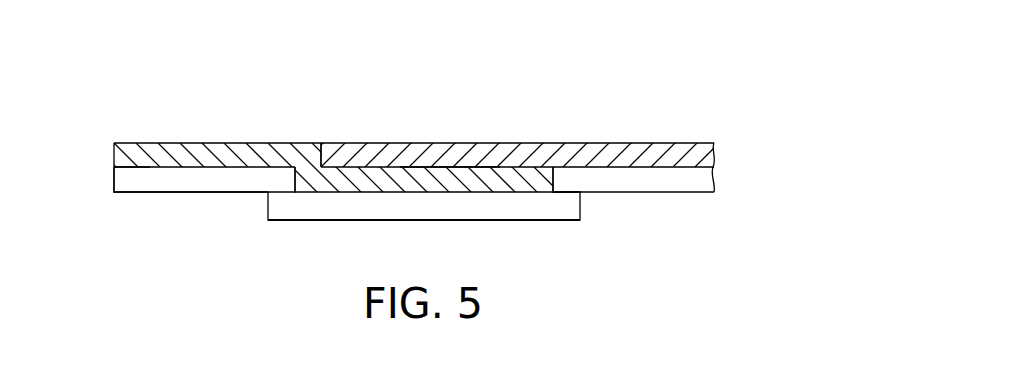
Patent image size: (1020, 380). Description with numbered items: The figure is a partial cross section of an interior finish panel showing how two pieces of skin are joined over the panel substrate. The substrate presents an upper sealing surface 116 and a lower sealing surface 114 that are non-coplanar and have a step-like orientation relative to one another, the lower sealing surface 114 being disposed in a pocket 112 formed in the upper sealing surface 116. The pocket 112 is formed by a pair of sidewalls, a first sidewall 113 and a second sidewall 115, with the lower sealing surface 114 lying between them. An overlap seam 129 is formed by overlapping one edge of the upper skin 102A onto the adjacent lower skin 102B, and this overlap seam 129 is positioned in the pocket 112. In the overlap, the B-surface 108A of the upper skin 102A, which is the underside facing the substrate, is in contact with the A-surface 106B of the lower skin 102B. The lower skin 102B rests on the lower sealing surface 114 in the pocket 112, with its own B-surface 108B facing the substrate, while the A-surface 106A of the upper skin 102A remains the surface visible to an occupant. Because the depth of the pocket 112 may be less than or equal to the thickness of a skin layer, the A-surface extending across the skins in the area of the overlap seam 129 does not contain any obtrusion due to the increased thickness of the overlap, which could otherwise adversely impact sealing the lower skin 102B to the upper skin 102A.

The upper skin 102A is at (673, 110).
The lower skin 102B is at (183, 112).
The A-surface of upper skin 106A is at (555, 142).
The A-surface of lower skin 106B is at (240, 142).
The B-surface of upper skin 108A is at (500, 170).
The B-surface of lower skin 108B is at (123, 170).
The pocket 112 is at (322, 230).
The first sidewall 113 is at (291, 191).
The lower sealing surface 114 is at (436, 182).
The second sidewall 115 is at (553, 191).
The upper sealing surface 116 is at (167, 167).
The overlap seam 129 is at (380, 112).